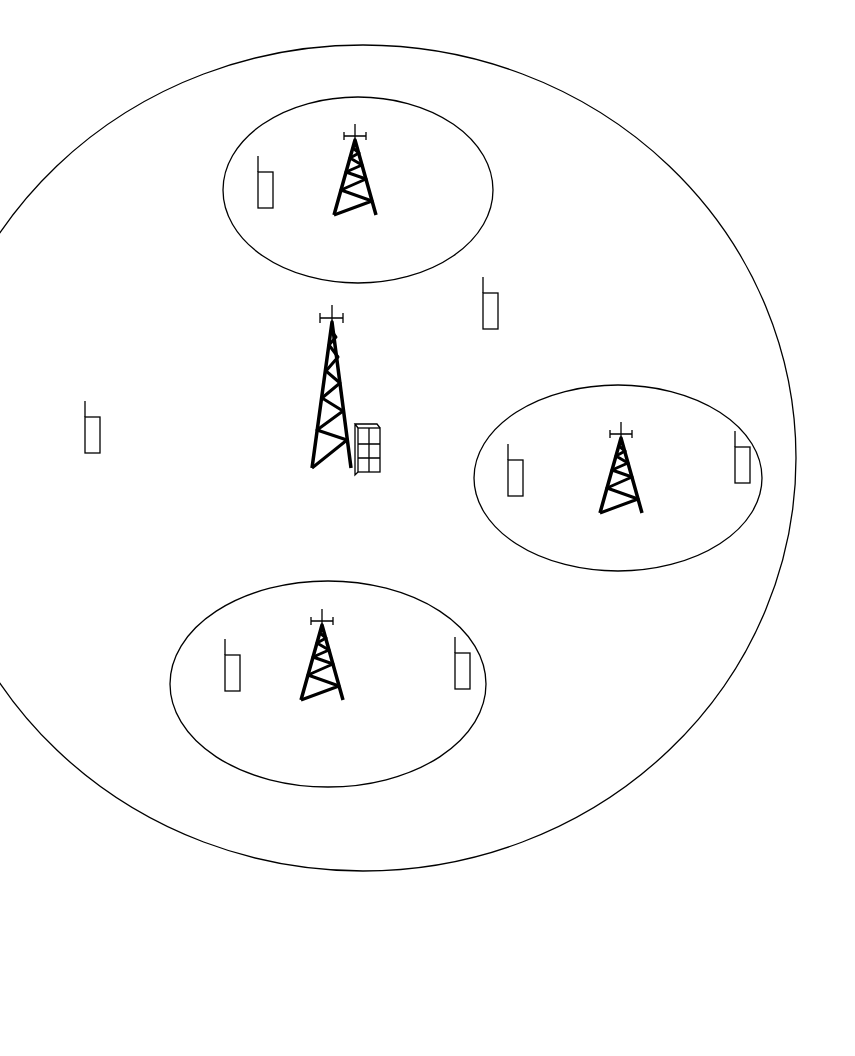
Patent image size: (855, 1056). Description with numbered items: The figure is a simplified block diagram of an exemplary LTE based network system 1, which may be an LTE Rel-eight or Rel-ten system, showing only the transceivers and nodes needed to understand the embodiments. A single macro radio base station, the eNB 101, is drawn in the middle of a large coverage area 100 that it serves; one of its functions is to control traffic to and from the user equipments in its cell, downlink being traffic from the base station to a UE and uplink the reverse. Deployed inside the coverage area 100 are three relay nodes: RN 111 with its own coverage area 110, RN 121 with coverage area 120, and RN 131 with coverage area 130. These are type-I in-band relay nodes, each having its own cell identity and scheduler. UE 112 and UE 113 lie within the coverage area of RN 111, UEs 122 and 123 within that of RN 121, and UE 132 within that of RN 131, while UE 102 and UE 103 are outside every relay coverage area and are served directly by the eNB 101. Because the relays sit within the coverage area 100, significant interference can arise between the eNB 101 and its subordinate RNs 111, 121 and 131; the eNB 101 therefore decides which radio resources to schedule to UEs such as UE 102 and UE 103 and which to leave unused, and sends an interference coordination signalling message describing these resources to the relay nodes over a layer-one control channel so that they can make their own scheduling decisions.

The LTE based network system 1 is at (108, 42).
The coverage area 100 is at (545, 78).
The eNB 101 is at (344, 421).
The UE 102 is at (90, 446).
The UE 103 is at (490, 325).
The coverage area 110 is at (647, 390).
The RN 111 is at (623, 495).
The UE 112 is at (520, 489).
The UE 113 is at (751, 483).
The coverage area 120 is at (250, 597).
The RN 121 is at (322, 687).
The UE 122 is at (239, 691).
The UE 123 is at (468, 689).
The coverage area 130 is at (490, 173).
The RN 131 is at (355, 202).
The UE 132 is at (262, 200).